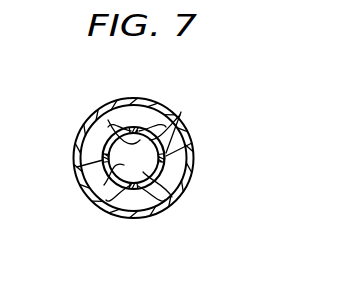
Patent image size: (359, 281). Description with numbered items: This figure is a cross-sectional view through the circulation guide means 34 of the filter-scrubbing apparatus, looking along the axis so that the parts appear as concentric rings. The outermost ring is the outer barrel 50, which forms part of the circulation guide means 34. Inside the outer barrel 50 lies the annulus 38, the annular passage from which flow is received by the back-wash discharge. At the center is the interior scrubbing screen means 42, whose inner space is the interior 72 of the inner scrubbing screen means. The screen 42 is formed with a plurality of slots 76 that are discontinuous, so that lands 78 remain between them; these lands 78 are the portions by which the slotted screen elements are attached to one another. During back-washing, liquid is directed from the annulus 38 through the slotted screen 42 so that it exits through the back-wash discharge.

The circulation guide means 34 is at (81, 126).
The annulus 38 is at (77, 167).
The interior scrubbing screen means 42 is at (181, 112).
The outer barrel 50 is at (192, 143).
The interior of the inner scrubbing screen means 72 is at (148, 164).
The slots 76 is at (166, 127).
The lands 78 is at (138, 127).